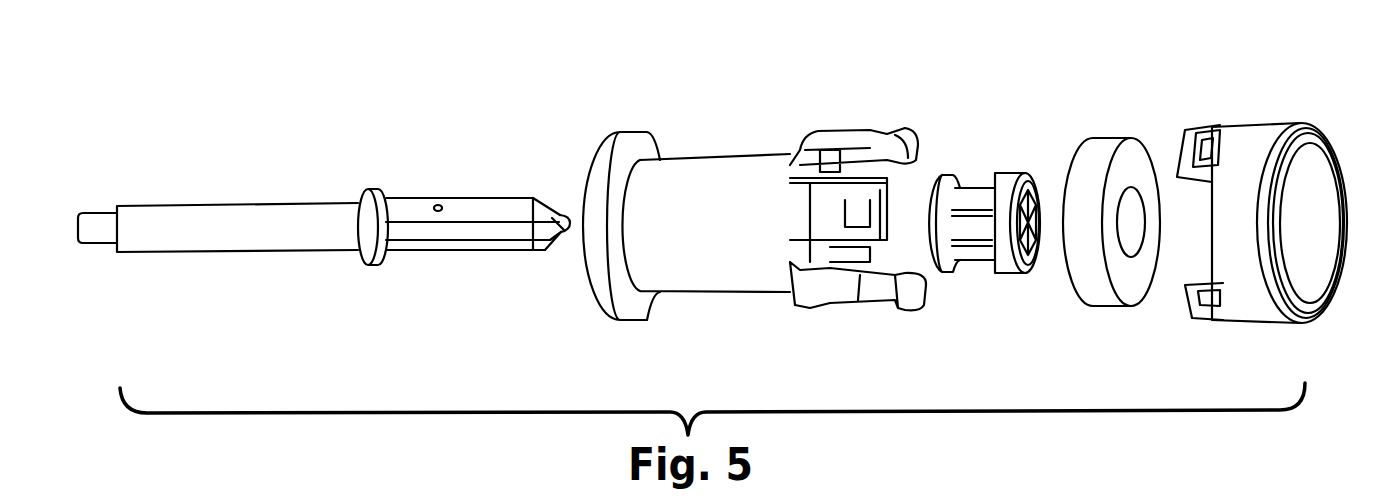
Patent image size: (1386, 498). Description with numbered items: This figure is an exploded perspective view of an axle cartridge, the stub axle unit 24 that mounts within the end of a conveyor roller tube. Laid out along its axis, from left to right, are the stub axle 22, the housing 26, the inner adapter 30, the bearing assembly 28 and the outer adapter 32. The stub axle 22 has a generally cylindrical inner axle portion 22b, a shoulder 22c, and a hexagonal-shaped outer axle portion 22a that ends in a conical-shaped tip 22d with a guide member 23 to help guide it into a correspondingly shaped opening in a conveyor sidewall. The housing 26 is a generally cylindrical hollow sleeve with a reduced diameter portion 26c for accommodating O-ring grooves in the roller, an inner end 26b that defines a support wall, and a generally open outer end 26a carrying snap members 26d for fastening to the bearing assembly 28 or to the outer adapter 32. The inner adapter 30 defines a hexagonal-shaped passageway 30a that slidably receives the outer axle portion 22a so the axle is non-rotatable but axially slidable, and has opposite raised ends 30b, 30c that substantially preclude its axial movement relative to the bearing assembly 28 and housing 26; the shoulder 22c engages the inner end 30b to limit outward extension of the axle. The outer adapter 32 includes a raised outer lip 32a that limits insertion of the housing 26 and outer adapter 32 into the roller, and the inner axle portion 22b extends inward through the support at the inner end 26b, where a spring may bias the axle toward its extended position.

The stub axle 22 is at (324, 211).
The outer axle portion 22a is at (440, 253).
The inner axle portion 22b is at (181, 238).
The shoulder 22c is at (372, 190).
The conical-shaped tip 22d is at (545, 218).
The guide member 23 is at (546, 252).
The stub axle unit 24 is at (637, 60).
The housing 26 is at (744, 202).
The outer end 26a is at (910, 181).
The inner end 26b is at (590, 288).
The reduced diameter portion 26c is at (688, 278).
The snap members 26d is at (813, 138).
The bearing assembly 28 is at (1115, 132).
The inner adapter 30 is at (994, 206).
The hexagonal-shaped passageway 30a is at (1028, 272).
The inner end 30b is at (950, 170).
The raised end 30c is at (1000, 262).
The outer adapter 32 is at (1276, 197).
The raised outer lip 32a is at (1310, 303).